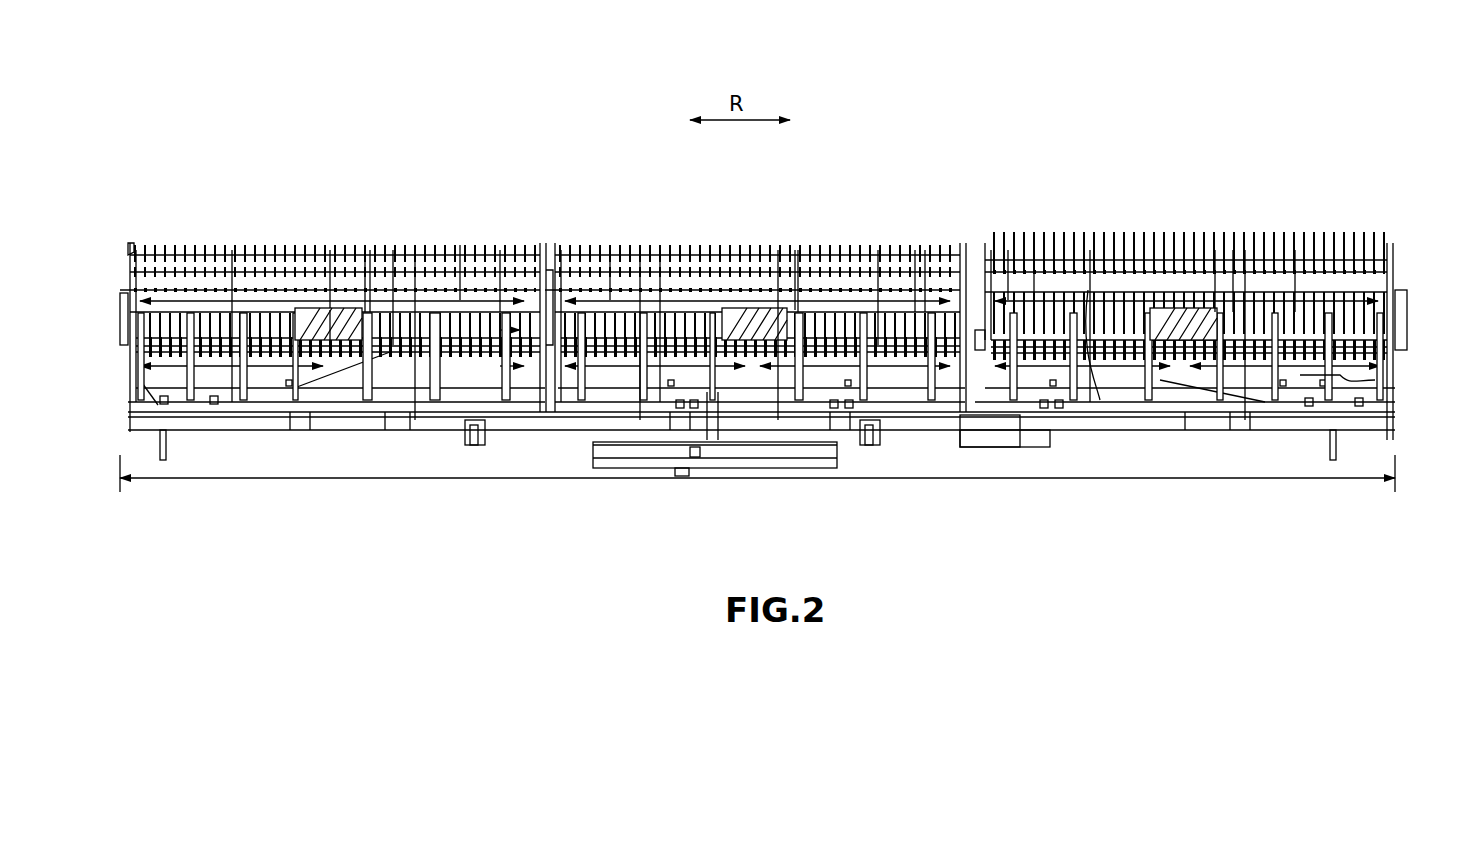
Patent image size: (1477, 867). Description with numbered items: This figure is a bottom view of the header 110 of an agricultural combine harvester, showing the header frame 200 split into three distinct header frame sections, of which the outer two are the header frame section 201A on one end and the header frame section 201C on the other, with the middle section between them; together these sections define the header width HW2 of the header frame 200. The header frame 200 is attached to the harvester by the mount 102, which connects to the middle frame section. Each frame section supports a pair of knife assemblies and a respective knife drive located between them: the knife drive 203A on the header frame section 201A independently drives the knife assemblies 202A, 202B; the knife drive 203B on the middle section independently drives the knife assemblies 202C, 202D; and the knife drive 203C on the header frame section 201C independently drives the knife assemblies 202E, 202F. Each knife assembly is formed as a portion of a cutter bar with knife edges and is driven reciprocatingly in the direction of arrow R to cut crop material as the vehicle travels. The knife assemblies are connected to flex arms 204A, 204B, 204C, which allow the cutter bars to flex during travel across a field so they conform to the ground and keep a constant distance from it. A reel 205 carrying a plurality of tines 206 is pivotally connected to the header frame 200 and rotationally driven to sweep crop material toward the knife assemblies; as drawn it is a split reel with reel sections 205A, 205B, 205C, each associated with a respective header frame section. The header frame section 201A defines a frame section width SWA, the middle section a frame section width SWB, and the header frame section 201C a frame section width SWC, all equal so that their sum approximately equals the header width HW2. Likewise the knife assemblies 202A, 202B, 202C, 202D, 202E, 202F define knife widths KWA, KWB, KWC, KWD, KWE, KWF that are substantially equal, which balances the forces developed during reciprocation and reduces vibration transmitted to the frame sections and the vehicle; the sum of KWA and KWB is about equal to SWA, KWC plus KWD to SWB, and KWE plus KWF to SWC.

The header 110 is at (1092, 118).
The header frame 200 is at (892, 458).
The mount 102 is at (665, 468).
The header width HW2 is at (752, 432).
The header frame section 201A is at (398, 425).
The header frame section 201C is at (1095, 420).
The knife assembly 202A is at (192, 420).
The knife assembly 202B is at (393, 248).
The knife assembly 202C is at (564, 420).
The knife assembly 202D is at (878, 420).
The knife assembly 202E is at (1100, 400).
The knife assembly 202F is at (1245, 420).
The knife drive 203A is at (335, 345).
The knife drive 203B is at (748, 345).
The knife drive 203C is at (1185, 345).
The flex arm 204A is at (148, 420).
The flex arm 204B is at (582, 420).
The flex arm 204C is at (1012, 420).
The reel 205 is at (725, 222).
The reel section 205A is at (500, 250).
The reel section 205B is at (925, 250).
The reel section 205C is at (1295, 250).
The tines 206 is at (474, 248).
The knife width KWA is at (328, 337).
The knife width KWB is at (415, 420).
The knife width KWC is at (640, 420).
The knife width KWD is at (778, 420).
The knife width KWE is at (1008, 250).
The knife width KWF is at (1375, 383).
The frame section width SWA is at (365, 248).
The frame section width SWB is at (798, 248).
The frame section width SWC is at (1215, 250).